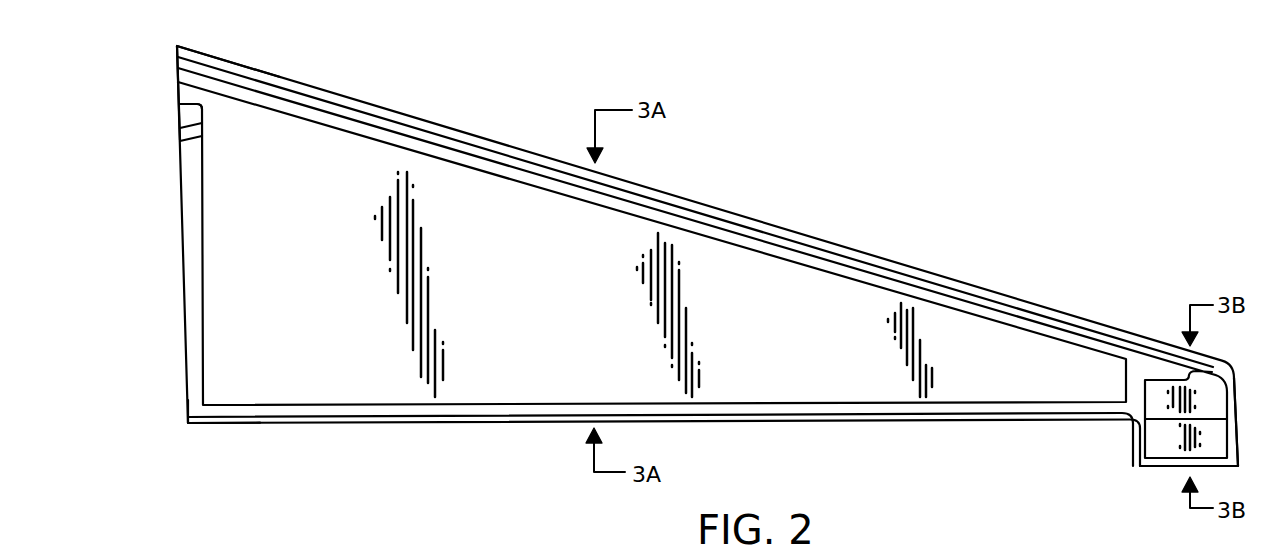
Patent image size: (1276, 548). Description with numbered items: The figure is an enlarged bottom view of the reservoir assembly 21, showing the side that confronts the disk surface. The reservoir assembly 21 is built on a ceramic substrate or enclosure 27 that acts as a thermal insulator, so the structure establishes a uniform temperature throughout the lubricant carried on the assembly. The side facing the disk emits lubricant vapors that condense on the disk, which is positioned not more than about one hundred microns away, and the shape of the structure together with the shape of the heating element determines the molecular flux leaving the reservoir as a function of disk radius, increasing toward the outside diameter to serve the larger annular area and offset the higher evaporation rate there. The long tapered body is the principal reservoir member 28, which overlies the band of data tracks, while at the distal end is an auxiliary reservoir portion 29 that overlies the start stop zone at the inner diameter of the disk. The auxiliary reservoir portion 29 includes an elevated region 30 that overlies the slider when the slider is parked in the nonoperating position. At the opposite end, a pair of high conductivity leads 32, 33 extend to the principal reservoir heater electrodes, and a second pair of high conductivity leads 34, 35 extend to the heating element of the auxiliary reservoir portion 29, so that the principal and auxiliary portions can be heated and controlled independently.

The reservoir assembly 21 is at (846, 220).
The ceramic substrate or enclosure 27 is at (903, 268).
The principal reservoir member 28 is at (745, 393).
The auxiliary reservoir portion 29 is at (1160, 405).
The elevated region 30 is at (1133, 462).
The high conductivity lead 32 is at (177, 87).
The high conductivity lead 33 is at (178, 124).
The high conductivity lead 34 is at (176, 60).
The high conductivity lead 35 is at (195, 427).